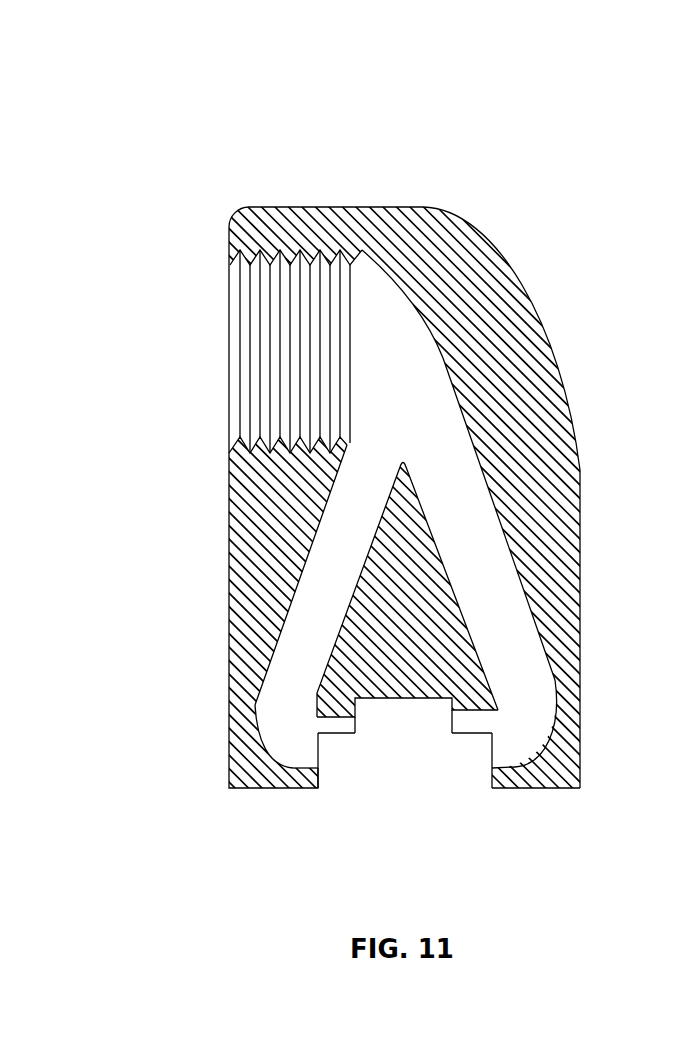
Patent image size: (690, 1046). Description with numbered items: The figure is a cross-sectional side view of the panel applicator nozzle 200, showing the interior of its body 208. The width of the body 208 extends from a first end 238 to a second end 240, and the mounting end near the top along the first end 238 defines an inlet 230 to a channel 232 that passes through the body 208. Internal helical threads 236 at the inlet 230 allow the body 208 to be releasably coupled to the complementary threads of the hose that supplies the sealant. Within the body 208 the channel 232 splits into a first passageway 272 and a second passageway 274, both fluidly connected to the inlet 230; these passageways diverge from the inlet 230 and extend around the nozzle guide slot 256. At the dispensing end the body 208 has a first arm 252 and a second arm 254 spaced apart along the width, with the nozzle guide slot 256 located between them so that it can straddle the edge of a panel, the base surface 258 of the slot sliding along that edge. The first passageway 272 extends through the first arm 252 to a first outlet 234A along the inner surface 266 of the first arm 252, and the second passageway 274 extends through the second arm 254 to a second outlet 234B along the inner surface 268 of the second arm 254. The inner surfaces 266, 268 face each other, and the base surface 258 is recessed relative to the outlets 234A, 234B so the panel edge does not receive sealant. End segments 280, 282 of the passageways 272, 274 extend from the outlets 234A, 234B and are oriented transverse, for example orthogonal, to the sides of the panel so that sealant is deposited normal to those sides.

The panel applicator nozzle 200 is at (305, 113).
The body 208 is at (477, 255).
The inlet 230 is at (227, 303).
The channel 232 is at (390, 333).
The internal helical threads 236 is at (280, 412).
The first end 238 is at (228, 565).
The second end 240 is at (588, 522).
The first arm 252 is at (252, 762).
The second arm 254 is at (575, 752).
The nozzle guide slot 256 is at (405, 745).
The base surface 258 is at (415, 713).
The inner surface of first arm 266 is at (318, 780).
The inner surface of second arm 268 is at (492, 781).
The first passageway 272 is at (335, 537).
The second passageway 274 is at (470, 513).
The end segment of first passageway 280 is at (312, 768).
The end segment of second passageway 282 is at (505, 761).
The first outlet 234A is at (335, 752).
The second outlet 234B is at (485, 750).